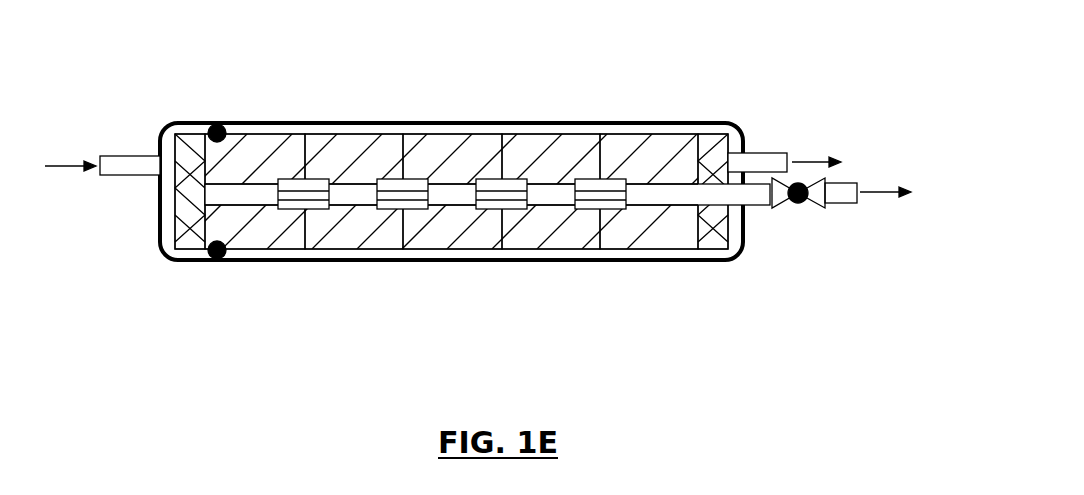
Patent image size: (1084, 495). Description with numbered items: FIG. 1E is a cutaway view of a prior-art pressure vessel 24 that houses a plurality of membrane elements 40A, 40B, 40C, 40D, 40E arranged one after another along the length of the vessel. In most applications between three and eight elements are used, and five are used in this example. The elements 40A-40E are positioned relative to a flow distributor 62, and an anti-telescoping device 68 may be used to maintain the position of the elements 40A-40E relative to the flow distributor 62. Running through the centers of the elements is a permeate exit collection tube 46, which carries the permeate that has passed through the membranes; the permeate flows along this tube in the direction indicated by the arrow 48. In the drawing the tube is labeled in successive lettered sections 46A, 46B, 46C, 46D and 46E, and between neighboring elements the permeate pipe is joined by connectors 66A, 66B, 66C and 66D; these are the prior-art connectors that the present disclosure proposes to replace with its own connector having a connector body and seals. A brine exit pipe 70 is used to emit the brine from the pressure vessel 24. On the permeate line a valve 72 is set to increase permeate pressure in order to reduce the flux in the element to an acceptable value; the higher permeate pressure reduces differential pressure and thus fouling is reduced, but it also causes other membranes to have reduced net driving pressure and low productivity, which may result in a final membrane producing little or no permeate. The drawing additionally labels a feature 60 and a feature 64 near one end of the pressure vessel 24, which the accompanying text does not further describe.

The pressure vessel 24 is at (180, 123).
The inlet 60 is at (110, 156).
The flow distributor 62 is at (187, 207).
The seal 64 is at (214, 259).
The permeate exit collection tube 46 is at (749, 205).
The tube section 46A is at (250, 192).
The tube section 46B is at (345, 192).
The tube section 46C is at (441, 192).
The tube section 46D is at (541, 192).
The permeate collection tube section 46E is at (637, 192).
The membrane element 40A is at (270, 147).
The membrane element 40B is at (360, 147).
The membrane element 40C is at (462, 147).
The membrane element 40D is at (560, 147).
The membrane element 40E is at (658, 147).
The connector 66A is at (285, 196).
The connector 66B is at (386, 196).
The connector 66C is at (487, 196).
The connector 66D is at (586, 196).
The anti-telescoping device 68 is at (732, 123).
The brine exit pipe 70 is at (773, 152).
The valve 72 is at (803, 204).
The arrow 48 is at (883, 192).